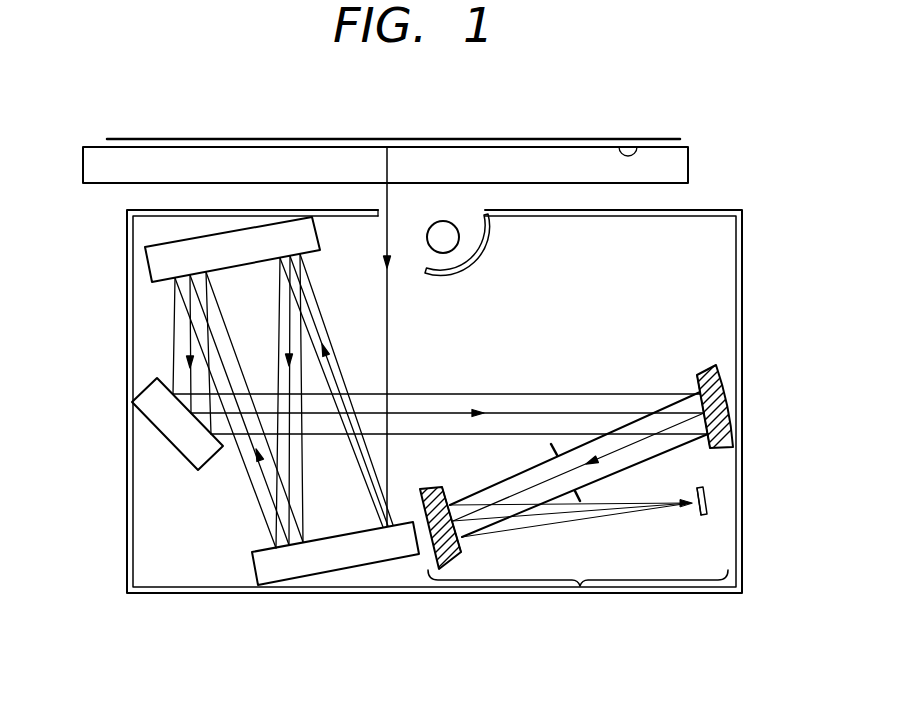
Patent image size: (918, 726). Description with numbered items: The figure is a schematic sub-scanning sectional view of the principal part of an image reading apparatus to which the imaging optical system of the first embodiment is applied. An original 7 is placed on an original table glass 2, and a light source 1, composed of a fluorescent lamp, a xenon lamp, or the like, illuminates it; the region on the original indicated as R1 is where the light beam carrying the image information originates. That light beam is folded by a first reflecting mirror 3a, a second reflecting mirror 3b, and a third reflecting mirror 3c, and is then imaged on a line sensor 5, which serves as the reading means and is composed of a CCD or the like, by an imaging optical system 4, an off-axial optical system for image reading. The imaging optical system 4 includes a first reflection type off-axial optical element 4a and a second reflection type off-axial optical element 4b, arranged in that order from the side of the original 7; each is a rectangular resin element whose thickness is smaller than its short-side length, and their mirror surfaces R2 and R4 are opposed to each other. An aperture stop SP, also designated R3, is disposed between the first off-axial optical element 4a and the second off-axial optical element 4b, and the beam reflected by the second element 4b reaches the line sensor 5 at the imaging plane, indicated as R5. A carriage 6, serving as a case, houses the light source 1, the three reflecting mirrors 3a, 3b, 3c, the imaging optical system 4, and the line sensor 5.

The light source 1 is at (448, 221).
The original table glass 2 is at (235, 147).
The first reflecting mirror 3a is at (345, 572).
The second reflecting mirror 3b is at (292, 226).
The third reflecting mirror 3c is at (167, 440).
The imaging optical system 4 is at (580, 586).
The first reflection type off-axial optical element 4a is at (706, 372).
The second reflection type off-axial optical element 4b is at (438, 489).
The line sensor 5 is at (706, 500).
The carriage 6 is at (742, 305).
The original 7 is at (143, 138).
The reading position on original R1 is at (627, 144).
The mirror surface of first off-axial optical element R2 is at (697, 380).
The aperture stop SP is at (583, 497).
The aperture stop R3 is at (577, 496).
The mirror surface of second off-axial optical element R4 is at (462, 552).
The image plane on sensor R5 is at (698, 512).